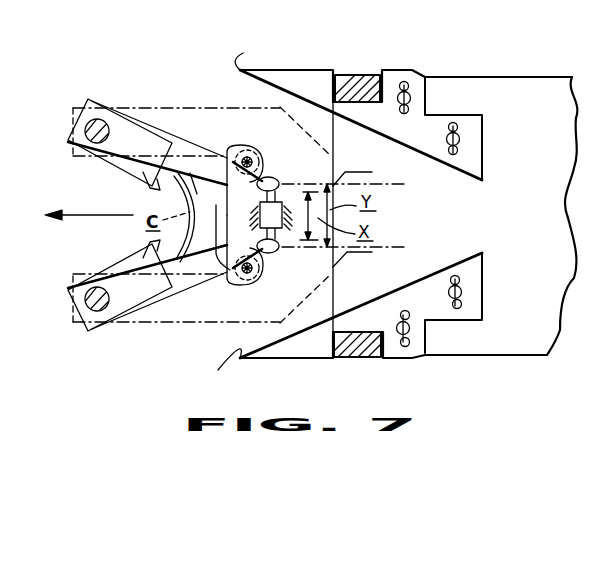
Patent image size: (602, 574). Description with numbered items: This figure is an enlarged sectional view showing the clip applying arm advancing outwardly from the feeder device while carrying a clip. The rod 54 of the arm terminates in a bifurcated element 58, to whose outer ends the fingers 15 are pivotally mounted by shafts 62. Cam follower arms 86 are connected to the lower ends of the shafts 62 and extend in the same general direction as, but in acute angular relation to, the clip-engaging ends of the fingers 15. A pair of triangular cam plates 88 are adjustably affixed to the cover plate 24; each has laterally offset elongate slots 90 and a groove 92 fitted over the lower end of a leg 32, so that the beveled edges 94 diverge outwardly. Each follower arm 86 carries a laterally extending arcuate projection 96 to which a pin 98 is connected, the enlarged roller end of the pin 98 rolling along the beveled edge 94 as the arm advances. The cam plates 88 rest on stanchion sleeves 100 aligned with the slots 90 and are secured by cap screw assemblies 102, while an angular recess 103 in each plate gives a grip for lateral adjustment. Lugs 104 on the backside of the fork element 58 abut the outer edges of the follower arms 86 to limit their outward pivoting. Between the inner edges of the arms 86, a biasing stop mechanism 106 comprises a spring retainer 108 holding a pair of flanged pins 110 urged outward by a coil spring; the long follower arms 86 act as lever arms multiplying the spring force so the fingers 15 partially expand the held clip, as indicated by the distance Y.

The finger 15 is at (150, 180).
The cover plate 24 is at (532, 90).
The legs 32 is at (372, 85).
The rod 54 is at (366, 253).
The bifurcated element 58 is at (230, 97).
The shaft 62 is at (85, 131).
The cam follower arm 86 is at (143, 137).
The cam plate 88 is at (295, 76).
The elongate slots 90 is at (400, 110).
The groove 92 is at (338, 68).
The beveled edge 94 is at (224, 209).
The arcuate projection 96 is at (258, 148).
The pin 98 is at (240, 170).
The stanchion sleeves 100 is at (408, 108).
The cap screw assemblies 102 is at (410, 86).
The angular recess 103 is at (442, 88).
The lugs 104 is at (200, 108).
The biasing stop mechanism 106 is at (285, 189).
The spring retainer 108 is at (258, 255).
The flanged pins 110 is at (262, 178).